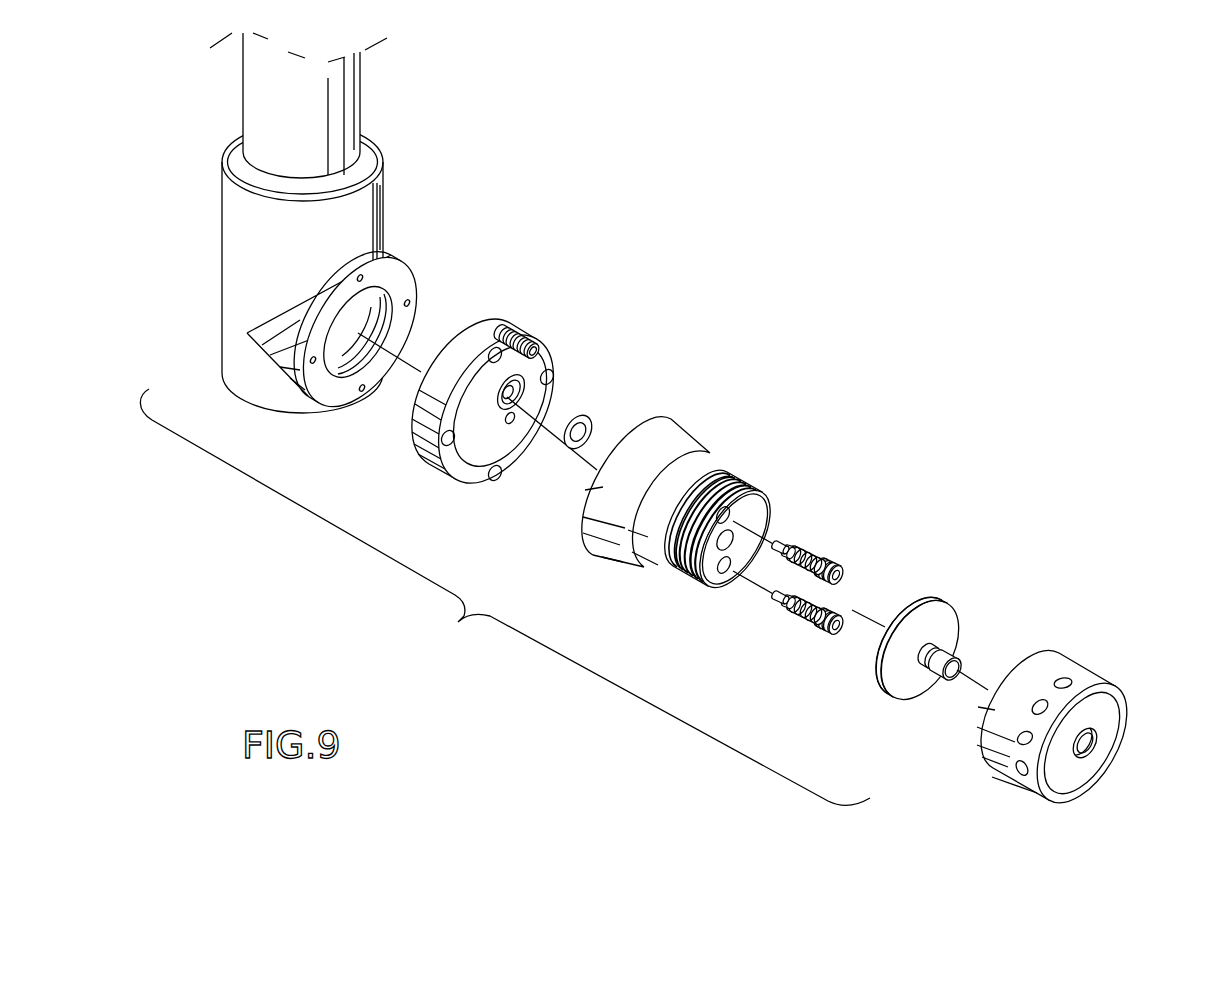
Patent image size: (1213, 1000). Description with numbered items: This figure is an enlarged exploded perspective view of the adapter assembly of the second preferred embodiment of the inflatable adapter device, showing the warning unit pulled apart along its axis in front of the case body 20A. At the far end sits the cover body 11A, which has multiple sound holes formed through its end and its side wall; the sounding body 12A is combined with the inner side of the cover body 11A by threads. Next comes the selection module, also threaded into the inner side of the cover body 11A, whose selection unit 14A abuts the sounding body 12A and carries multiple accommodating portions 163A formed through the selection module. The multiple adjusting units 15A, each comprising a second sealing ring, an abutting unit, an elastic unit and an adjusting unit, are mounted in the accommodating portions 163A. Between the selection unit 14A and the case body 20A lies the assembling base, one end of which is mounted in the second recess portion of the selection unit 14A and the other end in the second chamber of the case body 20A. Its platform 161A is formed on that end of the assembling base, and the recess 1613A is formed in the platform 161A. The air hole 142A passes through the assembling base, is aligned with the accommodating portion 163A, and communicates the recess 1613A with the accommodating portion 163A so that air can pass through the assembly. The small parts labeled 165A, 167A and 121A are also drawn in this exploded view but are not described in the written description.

The case body 20A is at (238, 252).
The platform 161A is at (478, 445).
The air hole 142A is at (507, 394).
The recess 1613A is at (515, 382).
The set screw 165A is at (532, 348).
The O-ring 167A is at (580, 418).
The selection unit 14A is at (688, 463).
The accommodating portions 163A is at (722, 570).
The adjusting units 15A is at (840, 567).
The disc 121A is at (897, 683).
The sounding body 12A is at (957, 647).
The cover body 11A is at (1113, 712).